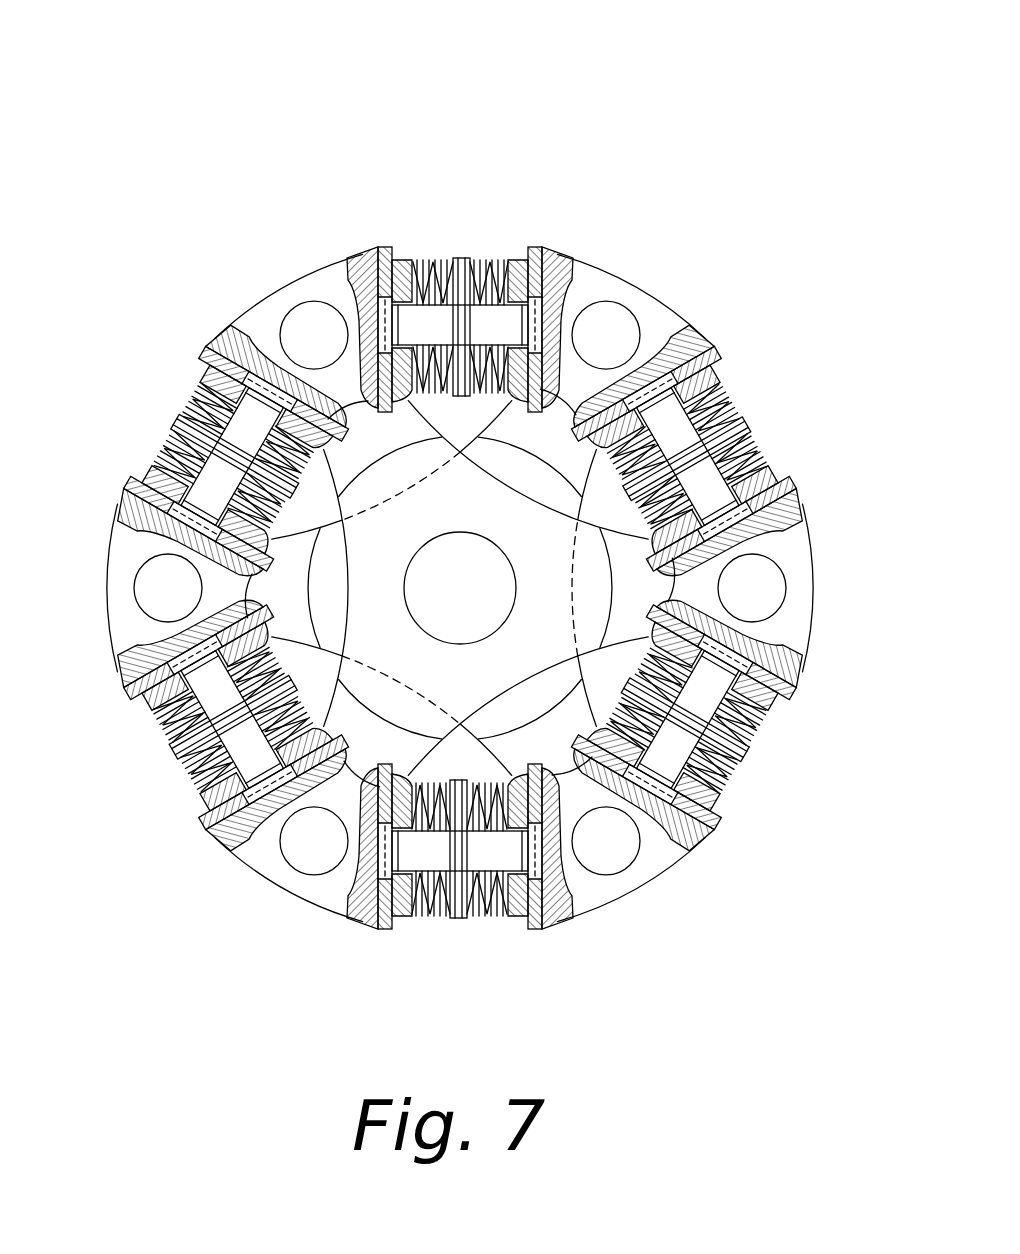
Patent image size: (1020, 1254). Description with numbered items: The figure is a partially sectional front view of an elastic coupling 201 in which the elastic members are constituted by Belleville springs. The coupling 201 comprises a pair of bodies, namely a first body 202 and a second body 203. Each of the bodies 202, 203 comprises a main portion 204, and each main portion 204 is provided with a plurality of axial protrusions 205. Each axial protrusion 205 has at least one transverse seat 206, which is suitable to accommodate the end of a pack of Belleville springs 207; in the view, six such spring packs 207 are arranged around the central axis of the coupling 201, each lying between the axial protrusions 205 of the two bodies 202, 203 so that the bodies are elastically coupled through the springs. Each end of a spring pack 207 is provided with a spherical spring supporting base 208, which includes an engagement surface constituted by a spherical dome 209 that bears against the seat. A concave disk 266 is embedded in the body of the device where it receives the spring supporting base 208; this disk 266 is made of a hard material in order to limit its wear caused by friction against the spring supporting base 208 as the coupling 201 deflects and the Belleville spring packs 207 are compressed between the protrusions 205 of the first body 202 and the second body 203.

The coupling 201 is at (722, 128).
The first body 202 is at (313, 263).
The second body 203 is at (650, 286).
The main portion 204 is at (383, 638).
The axial protrusion 205 is at (800, 572).
The transverse seat 206 is at (736, 382).
The pack of Belleville springs 207 is at (182, 455).
The spherical spring supporting base 208 is at (742, 420).
The pole shoe 209 is at (680, 372).
The concave disk 266 is at (716, 362).